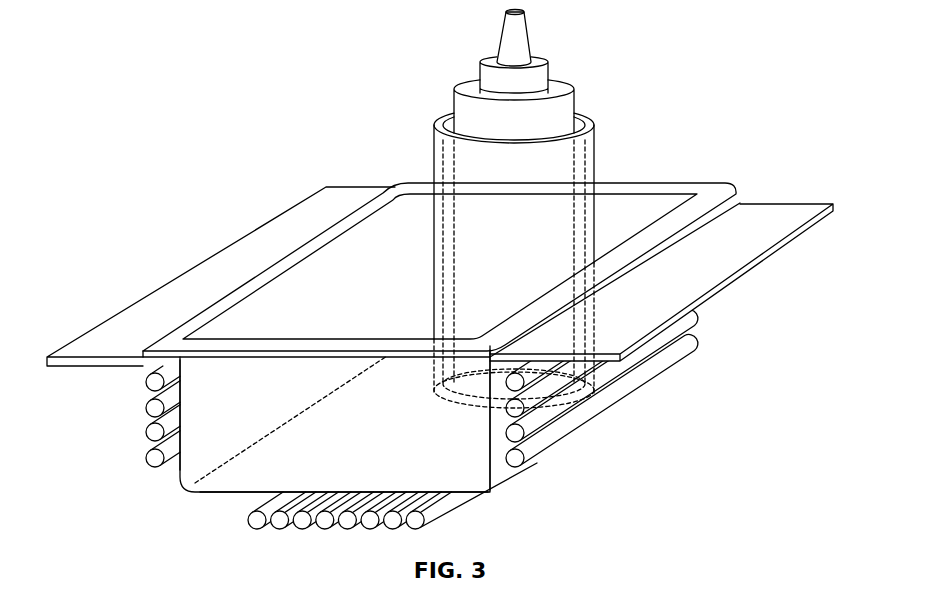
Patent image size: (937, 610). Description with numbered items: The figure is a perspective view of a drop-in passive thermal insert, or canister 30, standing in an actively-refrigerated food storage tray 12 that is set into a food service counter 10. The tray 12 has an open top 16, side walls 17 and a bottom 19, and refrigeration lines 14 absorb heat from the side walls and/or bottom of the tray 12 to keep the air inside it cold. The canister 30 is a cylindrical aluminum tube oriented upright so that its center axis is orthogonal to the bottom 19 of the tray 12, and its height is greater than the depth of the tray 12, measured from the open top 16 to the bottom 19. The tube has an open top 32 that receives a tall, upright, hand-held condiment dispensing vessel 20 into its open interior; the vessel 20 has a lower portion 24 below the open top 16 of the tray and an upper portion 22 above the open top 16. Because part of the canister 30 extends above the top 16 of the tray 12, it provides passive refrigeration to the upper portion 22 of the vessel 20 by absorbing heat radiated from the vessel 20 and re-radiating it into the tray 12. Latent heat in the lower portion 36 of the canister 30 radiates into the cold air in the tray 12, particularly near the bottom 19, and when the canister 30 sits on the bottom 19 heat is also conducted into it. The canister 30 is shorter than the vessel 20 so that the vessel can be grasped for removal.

The food service counter 10 is at (760, 203).
The food storage tray 12 is at (692, 188).
The refrigeration lines 14 is at (145, 380).
The open top 16 is at (368, 255).
The side walls 17 is at (241, 393).
The bottom 19 is at (381, 436).
The vessel 20 is at (523, 47).
The upper portion 22 is at (398, 82).
The lower portion 24 is at (397, 380).
The canister 30 is at (566, 305).
The open top 32 is at (582, 130).
The lower portion 36 is at (480, 377).